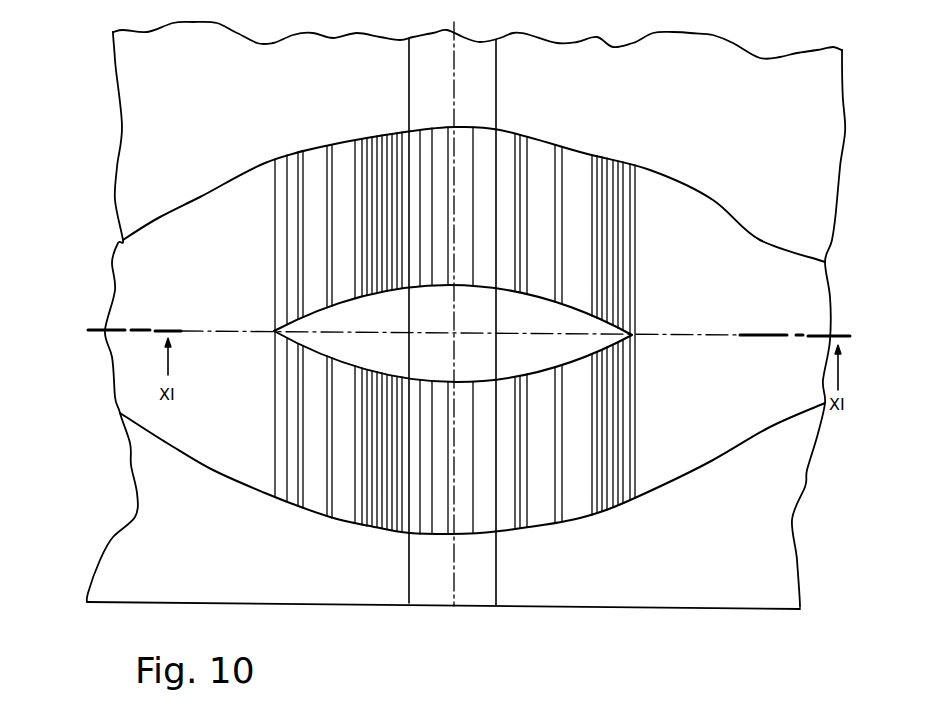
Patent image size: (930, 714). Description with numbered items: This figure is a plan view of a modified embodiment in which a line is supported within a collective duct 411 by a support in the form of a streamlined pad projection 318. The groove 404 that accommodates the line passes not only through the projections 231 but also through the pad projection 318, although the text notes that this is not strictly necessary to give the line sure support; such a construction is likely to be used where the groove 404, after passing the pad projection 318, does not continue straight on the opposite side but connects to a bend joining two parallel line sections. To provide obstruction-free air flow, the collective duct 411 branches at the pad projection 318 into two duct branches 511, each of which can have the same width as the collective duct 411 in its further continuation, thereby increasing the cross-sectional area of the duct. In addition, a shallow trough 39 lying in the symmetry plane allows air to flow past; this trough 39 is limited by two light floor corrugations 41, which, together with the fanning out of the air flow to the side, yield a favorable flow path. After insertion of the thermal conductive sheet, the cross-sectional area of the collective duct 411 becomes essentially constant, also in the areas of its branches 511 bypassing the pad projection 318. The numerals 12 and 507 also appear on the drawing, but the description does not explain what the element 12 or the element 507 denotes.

The body 12 is at (812, 297).
The trough 39 is at (460, 513).
The floor corrugations 41 is at (333, 508).
The projections 231 is at (238, 160).
The streamlined pad projection 318 is at (603, 329).
The groove 404 is at (485, 50).
The collective duct 411 is at (136, 404).
The upper body portion 507 is at (773, 70).
The duct branches 511 is at (494, 215).